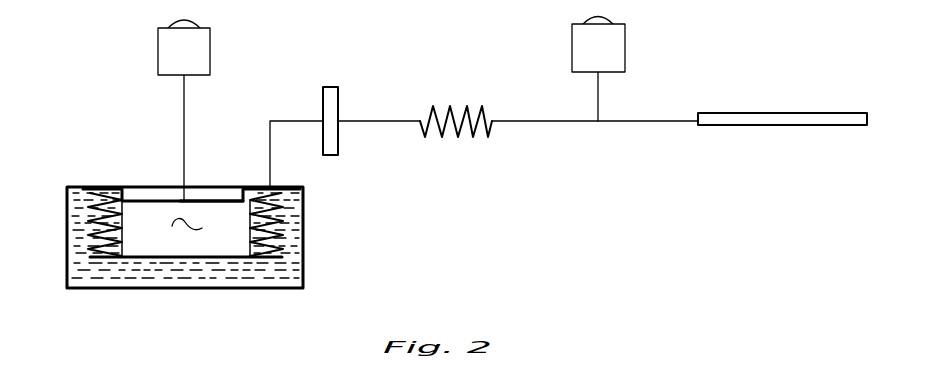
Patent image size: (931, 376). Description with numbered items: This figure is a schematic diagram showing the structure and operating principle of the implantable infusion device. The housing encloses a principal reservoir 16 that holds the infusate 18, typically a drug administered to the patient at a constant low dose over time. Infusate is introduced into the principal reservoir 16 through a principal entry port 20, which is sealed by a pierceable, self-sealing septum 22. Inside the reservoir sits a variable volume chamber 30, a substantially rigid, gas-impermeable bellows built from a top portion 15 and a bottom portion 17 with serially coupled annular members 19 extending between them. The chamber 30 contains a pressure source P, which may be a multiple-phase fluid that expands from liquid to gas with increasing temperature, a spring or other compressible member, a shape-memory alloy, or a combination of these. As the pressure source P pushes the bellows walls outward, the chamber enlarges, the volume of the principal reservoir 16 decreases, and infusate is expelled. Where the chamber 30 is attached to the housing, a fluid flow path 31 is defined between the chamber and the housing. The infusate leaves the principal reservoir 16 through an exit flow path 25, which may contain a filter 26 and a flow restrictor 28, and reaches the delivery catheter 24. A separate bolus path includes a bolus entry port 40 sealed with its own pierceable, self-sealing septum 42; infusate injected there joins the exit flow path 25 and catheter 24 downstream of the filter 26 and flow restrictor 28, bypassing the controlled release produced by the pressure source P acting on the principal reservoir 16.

The top portion 15 is at (215, 200).
The principal reservoir 16 is at (122, 275).
The bottom portion 17 is at (216, 263).
The infusate 18 is at (263, 282).
The annular members 19 is at (104, 198).
The principal entry port 20 is at (208, 100).
The septum 22 is at (217, 37).
The catheter 24 is at (760, 113).
The exit flow path 25 is at (269, 127).
The filter 26 is at (339, 106).
The flow restrictor 28 is at (465, 110).
The variable volume chamber 30 is at (280, 229).
The fluid flow path 31 is at (148, 200).
The bolus entry port 40 is at (624, 60).
The septum 42 is at (632, 35).
The pressure source P is at (184, 226).